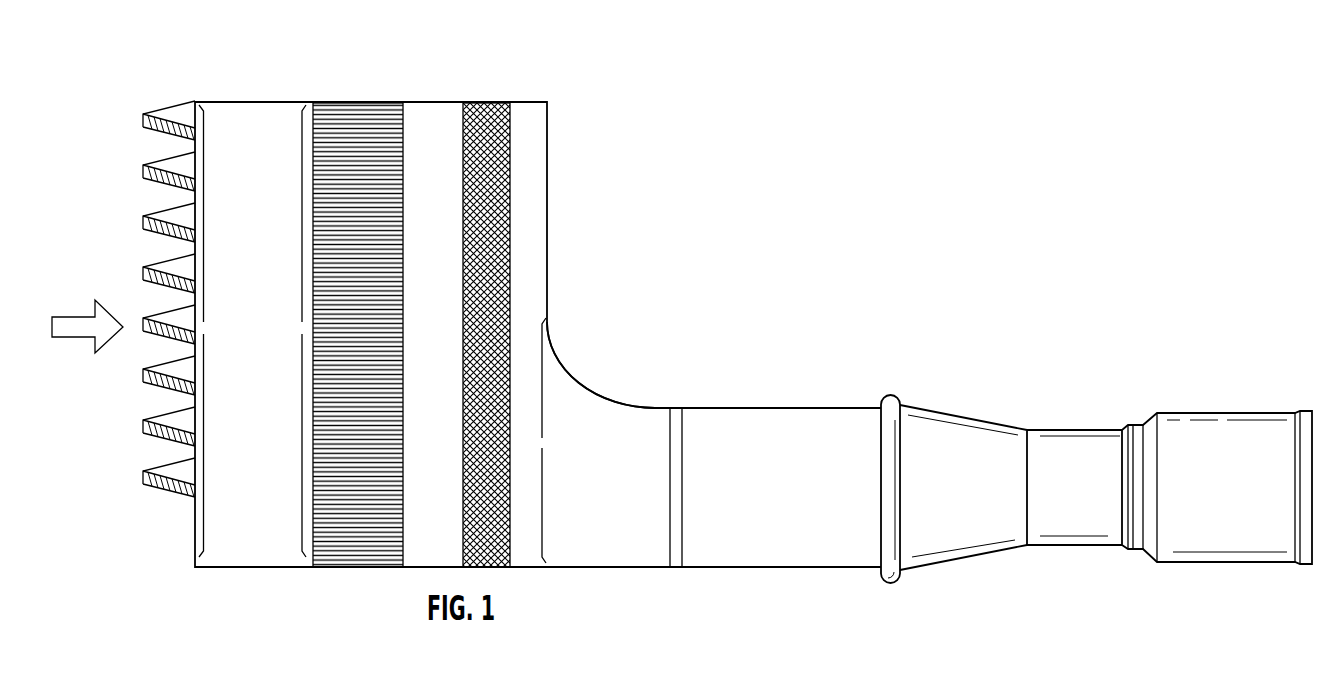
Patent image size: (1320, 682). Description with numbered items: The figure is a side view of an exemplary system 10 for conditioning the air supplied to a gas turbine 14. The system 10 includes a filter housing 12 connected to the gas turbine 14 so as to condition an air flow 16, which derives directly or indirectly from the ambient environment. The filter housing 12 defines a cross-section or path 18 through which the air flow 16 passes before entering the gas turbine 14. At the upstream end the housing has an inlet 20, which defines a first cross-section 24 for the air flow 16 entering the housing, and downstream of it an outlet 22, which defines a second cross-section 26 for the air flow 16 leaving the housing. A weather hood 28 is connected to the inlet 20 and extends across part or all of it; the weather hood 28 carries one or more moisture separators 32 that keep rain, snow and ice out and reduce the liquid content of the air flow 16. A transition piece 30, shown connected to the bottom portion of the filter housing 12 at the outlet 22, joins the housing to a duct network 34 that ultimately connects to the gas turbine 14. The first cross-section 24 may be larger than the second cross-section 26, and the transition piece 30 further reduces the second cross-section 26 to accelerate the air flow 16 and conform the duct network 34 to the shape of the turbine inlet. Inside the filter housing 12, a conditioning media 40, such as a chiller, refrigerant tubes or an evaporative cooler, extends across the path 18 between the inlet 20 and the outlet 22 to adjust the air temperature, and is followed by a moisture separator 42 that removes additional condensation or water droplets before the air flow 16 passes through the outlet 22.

The system 10 is at (1107, 223).
The filter housing 12 is at (450, 98).
The gas turbine 14 is at (890, 395).
The air flow 16 is at (78, 337).
The path 18 is at (302, 322).
The inlet 20 is at (193, 522).
The outlet 22 is at (548, 537).
The first cross-section 24 is at (204, 322).
The second cross-section 26 is at (542, 438).
The weather hood 28 is at (173, 155).
The transition piece 30 is at (640, 407).
The moisture separator 32 is at (163, 182).
The duct network 34 is at (708, 560).
The conditioning media 40 is at (367, 103).
The moisture separator 42 is at (489, 103).